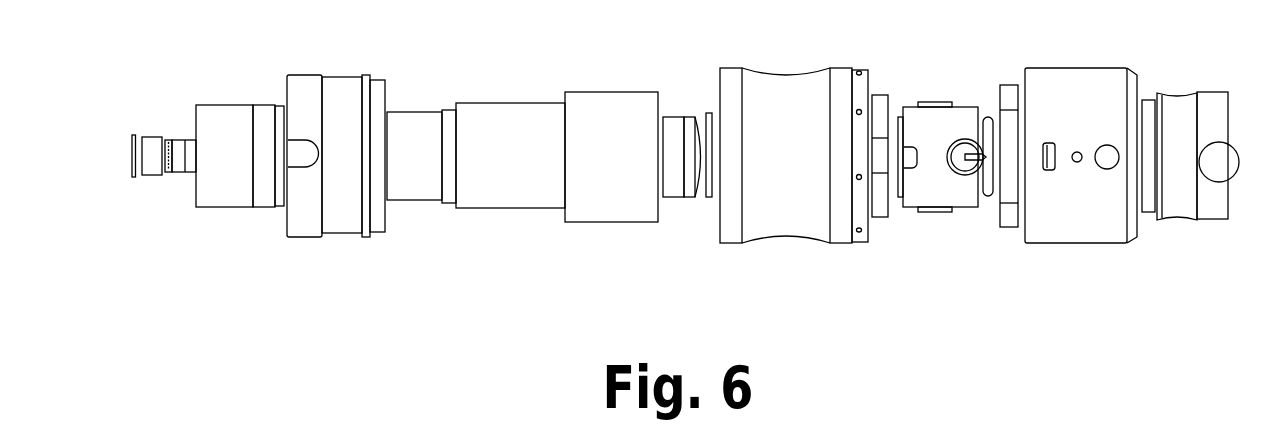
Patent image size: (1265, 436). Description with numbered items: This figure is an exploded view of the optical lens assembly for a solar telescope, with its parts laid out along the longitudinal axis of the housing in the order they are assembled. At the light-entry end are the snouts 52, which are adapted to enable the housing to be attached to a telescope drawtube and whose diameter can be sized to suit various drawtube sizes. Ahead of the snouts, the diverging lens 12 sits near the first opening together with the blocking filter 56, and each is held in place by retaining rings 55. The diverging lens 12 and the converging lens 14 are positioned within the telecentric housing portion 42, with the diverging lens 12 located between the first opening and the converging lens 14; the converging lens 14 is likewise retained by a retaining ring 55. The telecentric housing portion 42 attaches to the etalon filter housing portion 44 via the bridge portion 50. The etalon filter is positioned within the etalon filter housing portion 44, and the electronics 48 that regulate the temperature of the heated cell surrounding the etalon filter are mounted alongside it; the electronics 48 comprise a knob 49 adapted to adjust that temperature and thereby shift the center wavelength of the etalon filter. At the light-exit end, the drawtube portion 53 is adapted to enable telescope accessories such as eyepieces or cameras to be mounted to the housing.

The diverging lens 12 is at (180, 143).
The converging lens 14 is at (673, 200).
The telecentric housing portion 42 is at (463, 101).
The etalon filter housing portion 44 is at (1030, 68).
The electronics 48 is at (928, 203).
The knob 49 is at (965, 139).
The bridge portion 50 is at (755, 240).
The snouts 52 is at (230, 207).
The drawtube portion 53 is at (1180, 210).
The retaining rings 55 is at (132, 178).
The blocking filter 56 is at (148, 137).